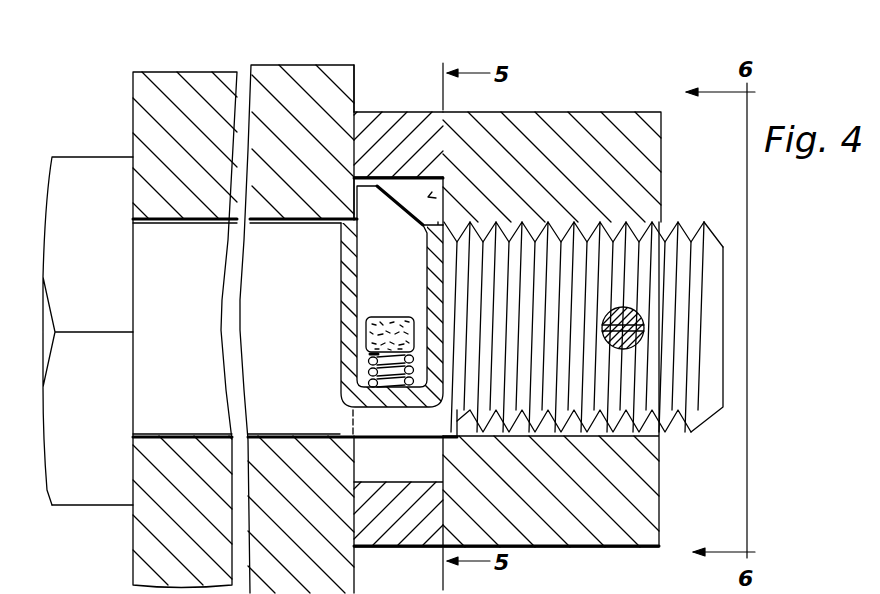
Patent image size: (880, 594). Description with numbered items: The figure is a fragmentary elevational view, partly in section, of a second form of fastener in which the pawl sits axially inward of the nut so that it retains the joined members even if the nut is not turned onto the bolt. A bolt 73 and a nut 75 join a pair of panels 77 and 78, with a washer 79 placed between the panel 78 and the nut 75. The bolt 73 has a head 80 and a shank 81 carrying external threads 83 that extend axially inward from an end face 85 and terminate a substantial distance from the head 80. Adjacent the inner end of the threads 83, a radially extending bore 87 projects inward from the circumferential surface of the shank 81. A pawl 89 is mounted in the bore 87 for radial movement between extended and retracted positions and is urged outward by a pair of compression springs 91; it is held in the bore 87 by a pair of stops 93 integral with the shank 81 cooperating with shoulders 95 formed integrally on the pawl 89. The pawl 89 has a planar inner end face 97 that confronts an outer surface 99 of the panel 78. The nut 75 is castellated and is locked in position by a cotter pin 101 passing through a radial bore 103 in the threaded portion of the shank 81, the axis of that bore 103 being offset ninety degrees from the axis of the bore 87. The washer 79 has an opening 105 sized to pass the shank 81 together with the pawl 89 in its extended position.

The bolt 73 is at (50, 507).
The nut 75 is at (613, 140).
The panel 77 is at (153, 102).
The panel 78 is at (297, 88).
The washer 79 is at (381, 112).
The head 80 is at (101, 473).
The shank 81 is at (178, 384).
The external threads 83 is at (708, 226).
The end face 85 is at (723, 323).
The bore 87 is at (365, 357).
The pawl 89 is at (388, 289).
The compression springs 91 is at (372, 387).
The stops 93 is at (438, 220).
The shoulders 95 is at (357, 228).
The inner end face 97 is at (358, 200).
The outer surface 99 is at (355, 70).
The cotter pin 101 is at (637, 311).
The radial bore 103 is at (640, 338).
The opening 105 is at (432, 192).